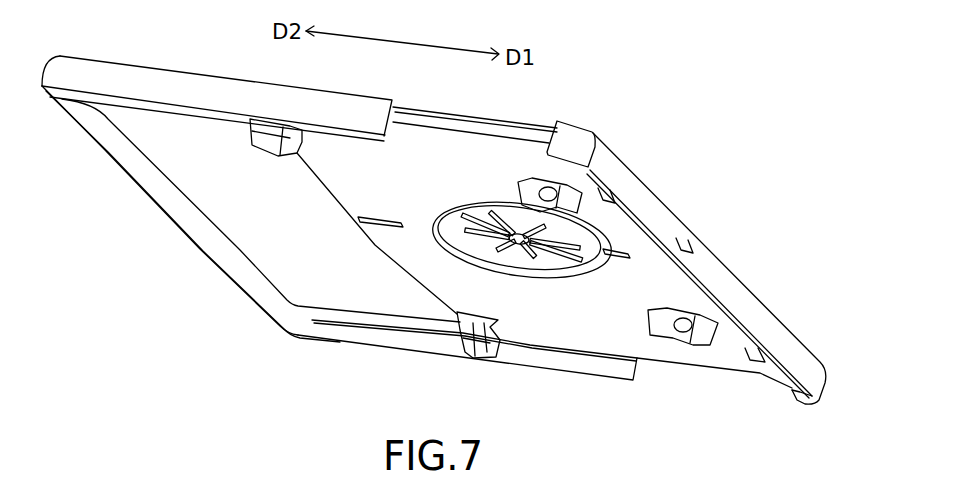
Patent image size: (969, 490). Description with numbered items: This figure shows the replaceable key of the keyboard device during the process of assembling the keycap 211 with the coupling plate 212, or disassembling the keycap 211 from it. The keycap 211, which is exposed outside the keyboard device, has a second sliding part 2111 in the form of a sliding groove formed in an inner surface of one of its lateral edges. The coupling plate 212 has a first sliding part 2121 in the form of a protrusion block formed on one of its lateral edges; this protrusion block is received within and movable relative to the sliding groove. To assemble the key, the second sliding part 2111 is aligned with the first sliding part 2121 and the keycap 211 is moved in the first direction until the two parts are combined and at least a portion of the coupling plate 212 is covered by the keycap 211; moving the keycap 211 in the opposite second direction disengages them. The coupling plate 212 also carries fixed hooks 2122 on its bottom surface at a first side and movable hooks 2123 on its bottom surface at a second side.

The keycap 211 is at (189, 64).
The second sliding part 2111 is at (400, 107).
The coupling plate 212 is at (686, 249).
The first sliding part 2121 is at (517, 123).
The fixed hooks 2122 is at (522, 182).
The movable hooks 2123 is at (268, 130).